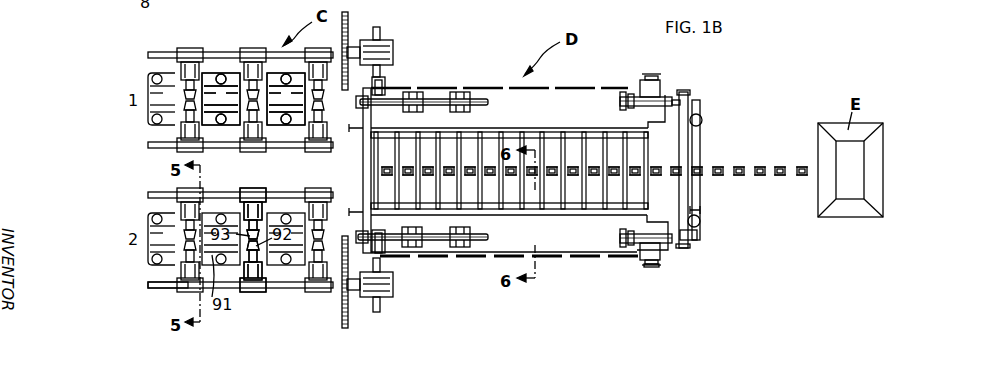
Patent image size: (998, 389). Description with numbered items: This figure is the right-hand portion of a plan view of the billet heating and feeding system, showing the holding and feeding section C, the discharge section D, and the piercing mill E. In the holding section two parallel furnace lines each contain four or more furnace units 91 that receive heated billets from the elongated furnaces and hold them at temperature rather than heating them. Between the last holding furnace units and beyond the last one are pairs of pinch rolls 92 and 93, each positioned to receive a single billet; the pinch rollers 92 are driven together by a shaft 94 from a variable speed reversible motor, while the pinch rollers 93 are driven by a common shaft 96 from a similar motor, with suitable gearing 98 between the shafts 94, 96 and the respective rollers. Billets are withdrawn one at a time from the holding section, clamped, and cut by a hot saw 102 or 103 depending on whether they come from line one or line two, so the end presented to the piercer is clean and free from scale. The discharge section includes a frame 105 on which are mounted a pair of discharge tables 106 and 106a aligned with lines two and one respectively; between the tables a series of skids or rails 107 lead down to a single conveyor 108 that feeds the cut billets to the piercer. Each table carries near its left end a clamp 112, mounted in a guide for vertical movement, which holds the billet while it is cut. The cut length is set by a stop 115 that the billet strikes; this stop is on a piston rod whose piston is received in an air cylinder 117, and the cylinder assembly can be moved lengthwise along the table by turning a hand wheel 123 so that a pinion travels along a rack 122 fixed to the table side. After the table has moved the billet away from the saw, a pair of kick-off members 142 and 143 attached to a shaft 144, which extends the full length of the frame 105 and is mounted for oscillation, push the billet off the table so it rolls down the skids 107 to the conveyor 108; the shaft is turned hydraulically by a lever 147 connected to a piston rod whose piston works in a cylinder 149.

The furnace unit 91 is at (212, 80).
The pinch roll 92 is at (256, 106).
The pinch roll 93 is at (250, 96).
The shaft 94 is at (163, 287).
The common shaft 96 is at (165, 194).
The gearing 98 is at (256, 196).
The hot saw 102 is at (348, 24).
The hot saw 103 is at (348, 314).
The frame 105 is at (688, 140).
The discharge table 106 is at (592, 238).
The discharge table 106a is at (547, 92).
The skids or rails 107 is at (440, 150).
The conveyor 108 is at (551, 178).
The clamp 112 is at (373, 240).
The stop 115 is at (622, 238).
The air cylinder 117 is at (648, 236).
The rack 122 is at (541, 256).
The hand wheel 123 is at (654, 266).
The kick-off member 142 is at (413, 238).
The kick-off member 143 is at (468, 236).
The shaft 144 is at (478, 245).
The lever 147 is at (698, 234).
The cylinder 149 is at (700, 220).